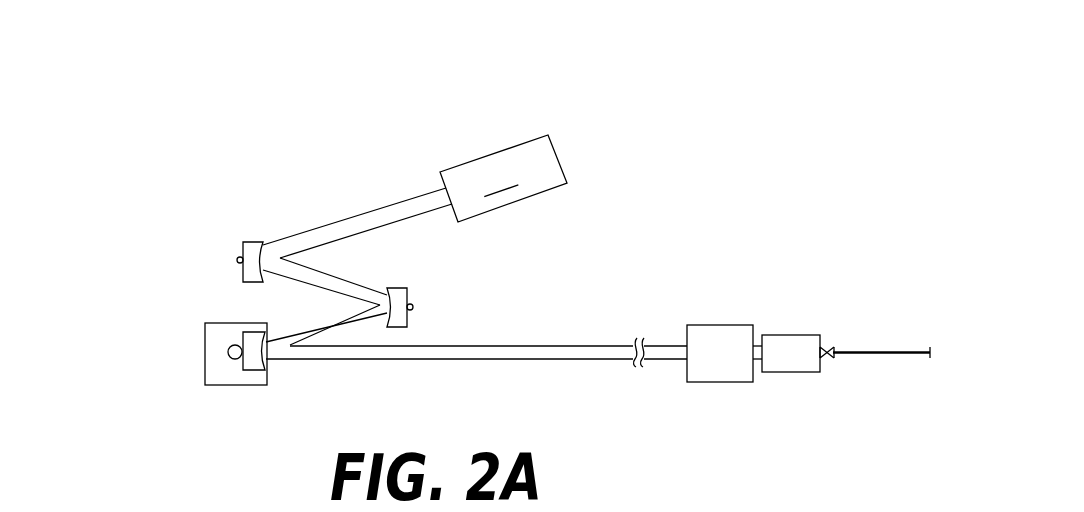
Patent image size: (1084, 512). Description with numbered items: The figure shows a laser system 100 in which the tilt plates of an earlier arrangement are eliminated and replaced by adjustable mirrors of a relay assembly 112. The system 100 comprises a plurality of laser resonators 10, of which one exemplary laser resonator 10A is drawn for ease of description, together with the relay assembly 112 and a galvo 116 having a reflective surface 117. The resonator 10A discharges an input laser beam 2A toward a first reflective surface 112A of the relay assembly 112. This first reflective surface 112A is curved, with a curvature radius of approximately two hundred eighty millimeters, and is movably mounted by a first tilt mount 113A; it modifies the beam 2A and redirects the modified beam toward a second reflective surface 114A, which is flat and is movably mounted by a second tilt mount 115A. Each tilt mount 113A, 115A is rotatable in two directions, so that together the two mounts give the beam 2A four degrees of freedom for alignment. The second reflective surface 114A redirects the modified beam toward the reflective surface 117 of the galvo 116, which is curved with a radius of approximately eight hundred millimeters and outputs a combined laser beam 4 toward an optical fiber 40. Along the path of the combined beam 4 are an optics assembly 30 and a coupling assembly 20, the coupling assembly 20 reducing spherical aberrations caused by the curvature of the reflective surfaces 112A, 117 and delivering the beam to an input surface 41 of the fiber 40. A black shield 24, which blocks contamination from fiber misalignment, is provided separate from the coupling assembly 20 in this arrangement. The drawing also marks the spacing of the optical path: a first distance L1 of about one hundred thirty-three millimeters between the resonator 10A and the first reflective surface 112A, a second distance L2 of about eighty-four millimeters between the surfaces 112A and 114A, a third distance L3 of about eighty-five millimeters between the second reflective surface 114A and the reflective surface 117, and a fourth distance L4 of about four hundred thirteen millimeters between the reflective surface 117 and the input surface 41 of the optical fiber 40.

The laser system 100 is at (145, 118).
The relay assembly 112 is at (147, 218).
The first reflective surface 112A is at (265, 244).
The first tilt mount 113A is at (237, 260).
The second reflective surface 114A is at (405, 300).
The second tilt mount 115A is at (413, 307).
The galvo 116 is at (205, 348).
The reflective surface 117 is at (266, 362).
The laser resonators 10 is at (572, 178).
The laser resonator 10A is at (578, 148).
The input laser beam 2A is at (487, 254).
The first distance L1 is at (348, 221).
The second distance L2 is at (358, 285).
The third distance L3 is at (288, 336).
The fourth distance L4 is at (587, 345).
The combined laser beam 4 is at (610, 362).
The optics assembly 30 is at (723, 383).
The coupling assembly 20 is at (793, 373).
The black shield 24 is at (827, 347).
The input surface 41 is at (833, 359).
The optical fiber 40 is at (893, 354).